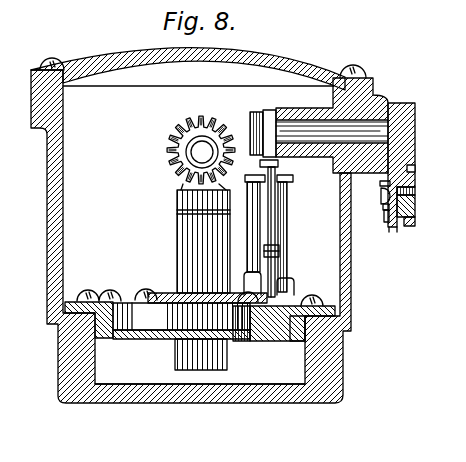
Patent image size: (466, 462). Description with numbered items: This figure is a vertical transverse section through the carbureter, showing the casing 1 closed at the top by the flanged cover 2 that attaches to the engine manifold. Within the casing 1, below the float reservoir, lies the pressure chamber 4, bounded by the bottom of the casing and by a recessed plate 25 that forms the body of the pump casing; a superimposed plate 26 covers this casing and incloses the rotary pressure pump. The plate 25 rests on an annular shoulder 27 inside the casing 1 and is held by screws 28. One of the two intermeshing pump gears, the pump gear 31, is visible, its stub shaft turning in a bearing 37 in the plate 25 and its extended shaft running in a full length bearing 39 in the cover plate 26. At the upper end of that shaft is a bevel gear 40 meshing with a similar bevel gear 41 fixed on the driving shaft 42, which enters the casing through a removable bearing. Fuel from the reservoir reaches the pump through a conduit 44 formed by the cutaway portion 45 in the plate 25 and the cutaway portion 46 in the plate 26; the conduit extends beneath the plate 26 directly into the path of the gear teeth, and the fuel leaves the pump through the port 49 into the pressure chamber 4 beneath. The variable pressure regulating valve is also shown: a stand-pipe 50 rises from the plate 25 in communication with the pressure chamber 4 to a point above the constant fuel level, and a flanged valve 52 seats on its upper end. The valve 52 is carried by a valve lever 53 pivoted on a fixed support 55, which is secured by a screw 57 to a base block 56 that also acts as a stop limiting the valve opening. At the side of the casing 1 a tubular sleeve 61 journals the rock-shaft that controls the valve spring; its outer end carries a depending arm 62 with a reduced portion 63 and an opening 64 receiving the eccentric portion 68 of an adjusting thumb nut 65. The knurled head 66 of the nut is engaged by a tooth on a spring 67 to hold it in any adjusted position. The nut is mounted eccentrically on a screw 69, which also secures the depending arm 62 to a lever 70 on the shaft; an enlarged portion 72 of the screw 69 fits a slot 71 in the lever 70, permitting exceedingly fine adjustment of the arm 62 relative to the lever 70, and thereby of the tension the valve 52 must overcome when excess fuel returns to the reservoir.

The casing 1 is at (47, 238).
The flanged cover 2 is at (105, 63).
The pressure chamber 4 is at (265, 386).
The recessed plate 25 is at (295, 341).
The superimposed plate 26 is at (163, 290).
The annular shoulder 27 is at (47, 322).
The screws 28 is at (80, 292).
The pump gear 31 is at (181, 334).
The bearing 37 is at (193, 375).
The full length bearing 39 is at (178, 228).
The bevel gear 40 is at (175, 179).
The bevel gear 41 is at (184, 133).
The driving shaft 42 is at (204, 146).
The conduit 44 is at (132, 300).
The cutaway portion 45 is at (126, 338).
The cutaway portion 46 is at (138, 313).
The port 49 is at (240, 342).
The stand-pipe 50 is at (250, 210).
The flanged valve 52 is at (289, 179).
The valve lever 53 is at (272, 216).
The fixed support 55 is at (287, 225).
The base block 56 is at (262, 286).
The screw 57 is at (282, 257).
The tubular sleeve 61 is at (303, 113).
The depending arm 62 is at (415, 160).
The reduced portion 63 is at (399, 228).
The opening 64 is at (393, 228).
The adjusting thumb nut 65 is at (416, 208).
The knurled head 66 is at (416, 222).
The spring 67 is at (416, 168).
The eccentric portion 68 is at (416, 196).
The screw 69 is at (381, 197).
The lever 70 is at (384, 219).
The slot 71 is at (383, 207).
The enlarged portion 72 is at (380, 184).